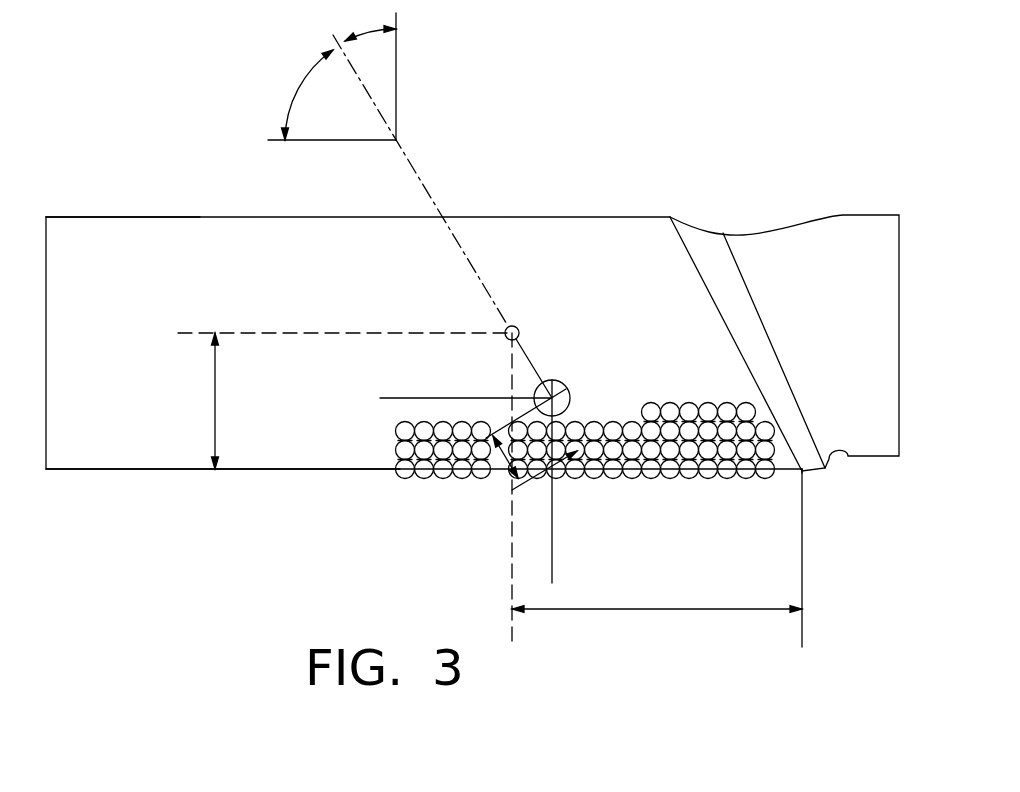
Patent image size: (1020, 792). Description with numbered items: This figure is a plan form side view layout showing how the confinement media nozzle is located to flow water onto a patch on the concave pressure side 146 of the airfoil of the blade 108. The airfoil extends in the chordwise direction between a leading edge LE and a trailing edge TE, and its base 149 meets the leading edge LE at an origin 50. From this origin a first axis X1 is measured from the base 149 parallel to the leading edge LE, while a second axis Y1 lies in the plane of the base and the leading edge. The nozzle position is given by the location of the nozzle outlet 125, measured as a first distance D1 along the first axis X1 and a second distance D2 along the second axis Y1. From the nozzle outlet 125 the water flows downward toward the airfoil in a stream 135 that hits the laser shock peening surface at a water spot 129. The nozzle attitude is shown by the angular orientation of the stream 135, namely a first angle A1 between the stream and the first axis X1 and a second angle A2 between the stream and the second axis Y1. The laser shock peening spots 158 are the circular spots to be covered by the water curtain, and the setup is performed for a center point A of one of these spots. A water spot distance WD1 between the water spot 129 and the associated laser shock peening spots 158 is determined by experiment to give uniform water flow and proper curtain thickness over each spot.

The blade 108 is at (328, 534).
The concave pressure side 146 is at (140, 266).
The base 149 is at (783, 435).
The origin 50 is at (803, 474).
The nozzle outlet 125 is at (513, 325).
The water spot 129 is at (562, 384).
The stream 135 is at (533, 367).
The laser shock peening spots 158 is at (592, 420).
The trailing edge TE is at (222, 217).
The leading edge LE is at (173, 469).
The center point A is at (573, 463).
The first angle A1 is at (303, 78).
The second angle A2 is at (364, 38).
The first axis X1 is at (332, 158).
The second axis Y1 is at (420, 76).
The first distance D1 is at (643, 611).
The second distance D2 is at (216, 398).
The water spot distance WD1 is at (496, 470).